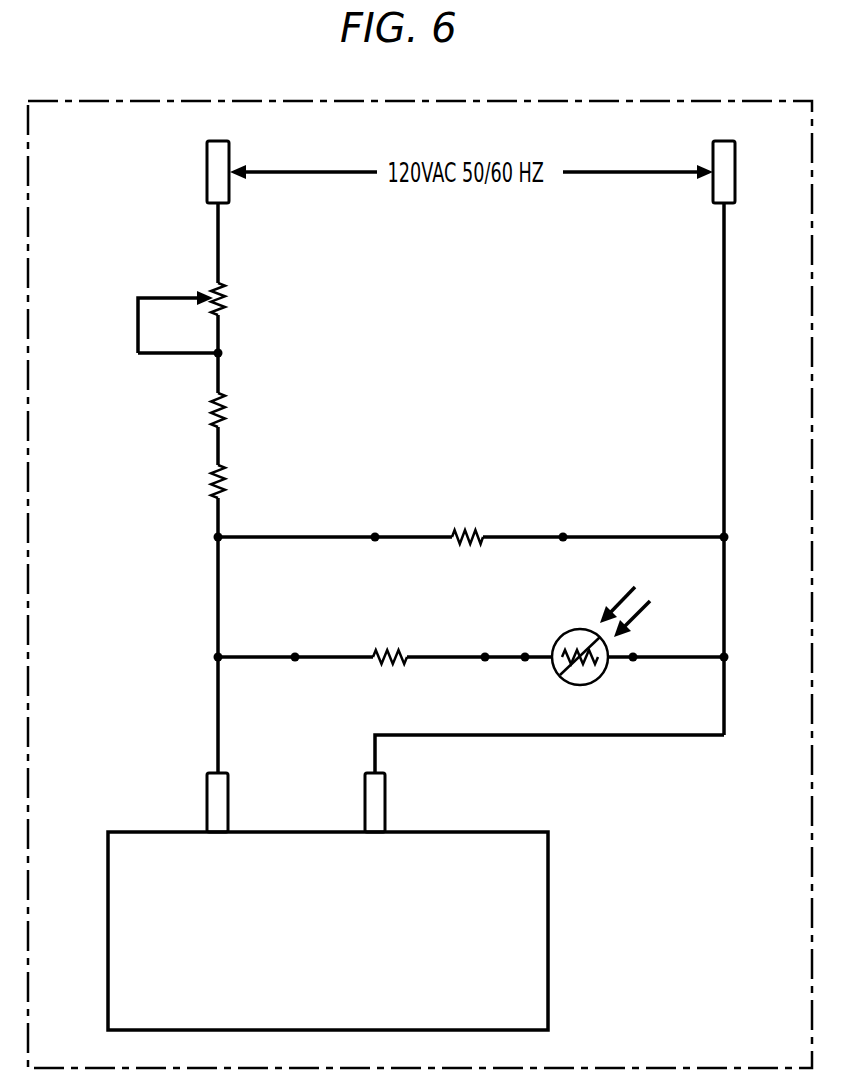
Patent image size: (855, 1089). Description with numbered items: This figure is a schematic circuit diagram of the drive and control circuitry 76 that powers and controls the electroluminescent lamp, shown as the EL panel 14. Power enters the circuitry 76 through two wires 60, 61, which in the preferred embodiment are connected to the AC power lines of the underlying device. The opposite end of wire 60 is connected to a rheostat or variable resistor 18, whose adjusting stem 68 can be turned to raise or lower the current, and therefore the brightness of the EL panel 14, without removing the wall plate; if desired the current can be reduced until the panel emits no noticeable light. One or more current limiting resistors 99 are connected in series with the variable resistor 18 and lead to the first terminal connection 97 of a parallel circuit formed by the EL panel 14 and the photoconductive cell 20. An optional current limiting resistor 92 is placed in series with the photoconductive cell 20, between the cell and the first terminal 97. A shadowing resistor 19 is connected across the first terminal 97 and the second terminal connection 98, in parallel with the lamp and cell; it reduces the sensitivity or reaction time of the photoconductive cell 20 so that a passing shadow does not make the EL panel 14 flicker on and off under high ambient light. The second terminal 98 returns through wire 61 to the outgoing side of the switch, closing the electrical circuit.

The drive and control circuitry 76 is at (96, 100).
The wire 60 is at (170, 144).
The wire 61 is at (735, 170).
The variable resistor 18 is at (165, 272).
The adjusting stem 68 is at (138, 325).
The current limiting resistor 99 is at (160, 391).
The shadowing resistor 19 is at (472, 545).
The current limiting resistor 92 is at (368, 695).
The photoconductive cell 20 is at (602, 678).
The first terminal connection 97 is at (157, 758).
The second terminal connection 98 is at (385, 806).
The EL panel 14 is at (548, 940).